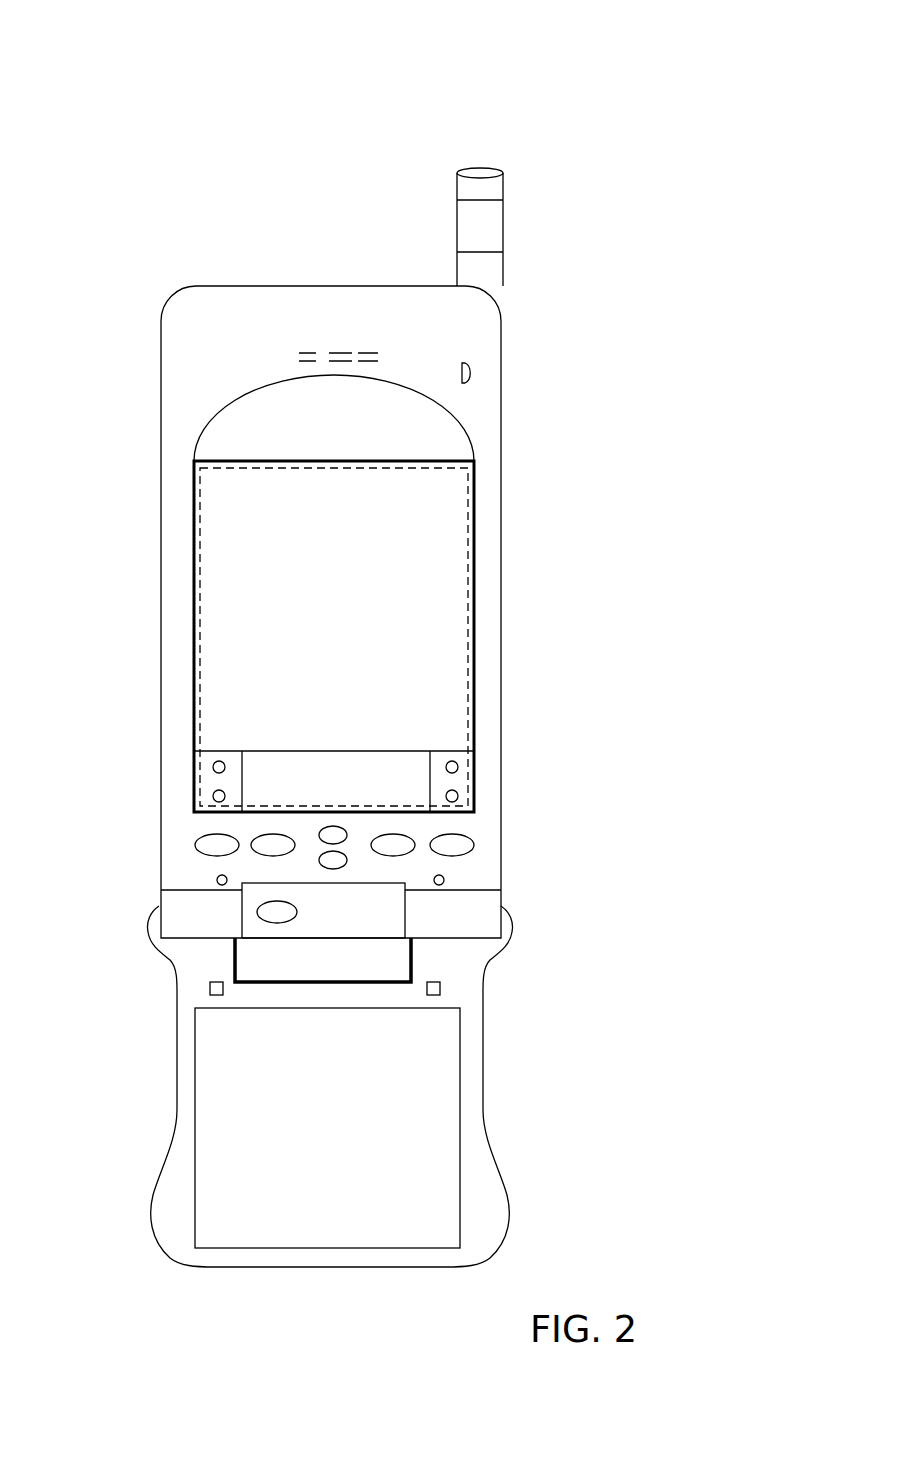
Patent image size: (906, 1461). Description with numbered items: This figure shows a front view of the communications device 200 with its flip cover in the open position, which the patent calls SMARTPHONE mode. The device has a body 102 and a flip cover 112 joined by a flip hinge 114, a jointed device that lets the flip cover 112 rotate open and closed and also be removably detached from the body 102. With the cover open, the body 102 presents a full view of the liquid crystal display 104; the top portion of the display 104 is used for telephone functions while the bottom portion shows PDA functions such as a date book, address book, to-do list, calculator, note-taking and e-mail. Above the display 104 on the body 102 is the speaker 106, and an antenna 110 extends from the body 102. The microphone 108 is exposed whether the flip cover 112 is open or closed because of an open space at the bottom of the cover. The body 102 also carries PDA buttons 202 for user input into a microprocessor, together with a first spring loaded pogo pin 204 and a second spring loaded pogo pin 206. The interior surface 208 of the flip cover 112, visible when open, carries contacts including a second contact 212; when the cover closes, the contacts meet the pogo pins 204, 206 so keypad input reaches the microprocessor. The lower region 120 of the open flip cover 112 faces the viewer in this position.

The wireless communication device 200 is at (488, 65).
The body 102 is at (501, 488).
The liquid crystal display (LCD) 104 is at (433, 618).
The speaker 106 is at (339, 353).
The microphone 108 is at (257, 914).
The antenna 110 is at (490, 167).
The flip cover 112 is at (497, 1173).
The flip hinge 114 is at (510, 932).
The keypad area 120 is at (323, 1237).
The PDA buttons 202 is at (207, 989).
The first spring loaded pogo pin 204 is at (442, 990).
The second spring loaded pogo pin 206 is at (217, 879).
The interior surface 208 is at (444, 880).
The second contact 212 is at (470, 845).